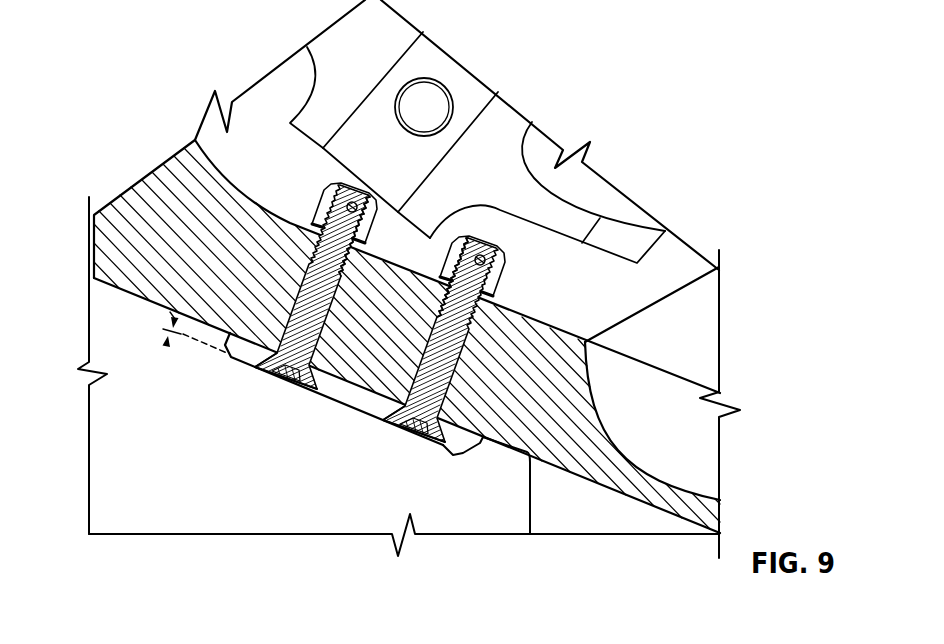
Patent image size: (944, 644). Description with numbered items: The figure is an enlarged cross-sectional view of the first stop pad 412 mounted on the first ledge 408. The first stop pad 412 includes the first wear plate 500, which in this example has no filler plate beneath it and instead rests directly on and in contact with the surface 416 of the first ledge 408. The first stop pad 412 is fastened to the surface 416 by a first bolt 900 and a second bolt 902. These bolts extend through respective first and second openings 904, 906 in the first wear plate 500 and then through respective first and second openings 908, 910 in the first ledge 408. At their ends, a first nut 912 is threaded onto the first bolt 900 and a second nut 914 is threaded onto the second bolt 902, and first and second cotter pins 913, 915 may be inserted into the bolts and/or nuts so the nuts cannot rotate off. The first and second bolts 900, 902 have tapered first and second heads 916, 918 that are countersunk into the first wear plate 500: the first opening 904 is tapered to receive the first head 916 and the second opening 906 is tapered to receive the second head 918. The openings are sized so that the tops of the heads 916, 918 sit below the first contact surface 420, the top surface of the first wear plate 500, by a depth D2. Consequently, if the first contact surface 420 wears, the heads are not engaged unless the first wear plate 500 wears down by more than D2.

The first ledge 408 is at (113, 253).
The first stop pad 412 is at (228, 424).
The surface of the first ledge 416 is at (139, 297).
The first contact surface 420 is at (457, 458).
The first wear plate 500 is at (353, 406).
The first bolt 900 is at (304, 284).
The second bolt 902 is at (460, 361).
The first opening in the first wear plate 904 is at (258, 353).
The second opening in the first wear plate 906 is at (381, 405).
The first opening in the first ledge 908 is at (290, 291).
The second opening in the first ledge 910 is at (417, 337).
The first nut 912 is at (330, 196).
The first cotter pin 913 is at (364, 198).
The second nut 914 is at (457, 258).
The second cotter pin 915 is at (498, 266).
The first head 916 is at (289, 380).
The second head 918 is at (410, 430).
The countersink depth D2 is at (166, 345).